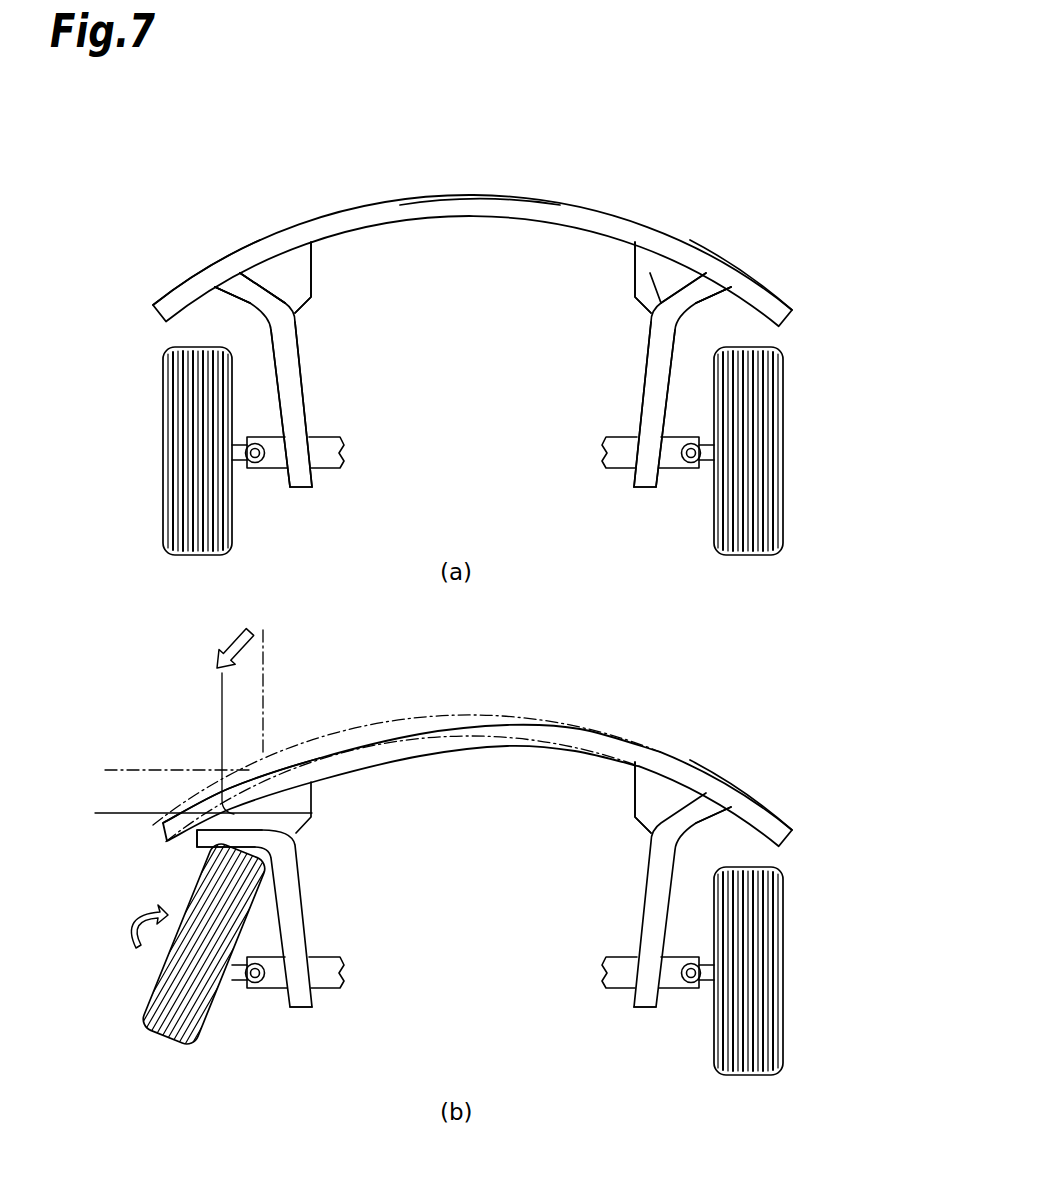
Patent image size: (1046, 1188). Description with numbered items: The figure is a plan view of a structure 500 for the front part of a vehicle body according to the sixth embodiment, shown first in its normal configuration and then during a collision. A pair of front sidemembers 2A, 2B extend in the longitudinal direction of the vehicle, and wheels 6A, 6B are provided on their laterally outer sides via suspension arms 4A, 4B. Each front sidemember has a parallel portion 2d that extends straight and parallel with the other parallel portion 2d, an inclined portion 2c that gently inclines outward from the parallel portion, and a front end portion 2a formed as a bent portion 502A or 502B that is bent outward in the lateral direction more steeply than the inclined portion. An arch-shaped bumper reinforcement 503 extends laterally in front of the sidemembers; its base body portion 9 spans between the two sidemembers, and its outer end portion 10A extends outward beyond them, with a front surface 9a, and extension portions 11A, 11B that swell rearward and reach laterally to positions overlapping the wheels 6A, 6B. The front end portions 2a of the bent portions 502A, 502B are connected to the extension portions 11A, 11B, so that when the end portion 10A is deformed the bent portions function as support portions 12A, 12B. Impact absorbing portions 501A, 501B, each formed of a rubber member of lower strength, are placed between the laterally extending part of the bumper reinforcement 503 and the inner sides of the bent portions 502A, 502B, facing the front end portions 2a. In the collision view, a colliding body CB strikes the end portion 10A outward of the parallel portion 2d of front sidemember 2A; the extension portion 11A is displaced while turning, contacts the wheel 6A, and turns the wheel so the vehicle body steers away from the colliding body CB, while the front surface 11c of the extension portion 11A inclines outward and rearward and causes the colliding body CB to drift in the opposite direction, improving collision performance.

The structure for a front part of a vehicle body 500 is at (322, 176).
The bumper reinforcement 503 is at (563, 185).
The base body portion 9 is at (496, 218).
The top surface of arch frame 9a is at (503, 195).
The impact absorbing portion 501A is at (296, 281).
The impact absorbing portion 501B is at (650, 279).
The end portion of the bumper reinforcement 10A is at (196, 228).
The extension portion 11A is at (200, 262).
The extension portion 11B is at (745, 262).
The front surface of the extension portion 11c is at (223, 262).
The front sidemember 2A is at (305, 462).
The front sidemember 2B is at (633, 462).
The front end portion 2a is at (217, 288).
The inclined portion 2c is at (298, 383).
The parallel portion 2d is at (304, 443).
The bent portion 502A is at (279, 576).
The support portion 12A is at (248, 297).
The bent portion 502B is at (773, 579).
The support portion 12B is at (700, 295).
The suspension arm 4A is at (278, 456).
The suspension arm 4B is at (668, 456).
The wheel 6A is at (191, 452).
The wheel 6B is at (760, 455).
The colliding body CB is at (118, 815).